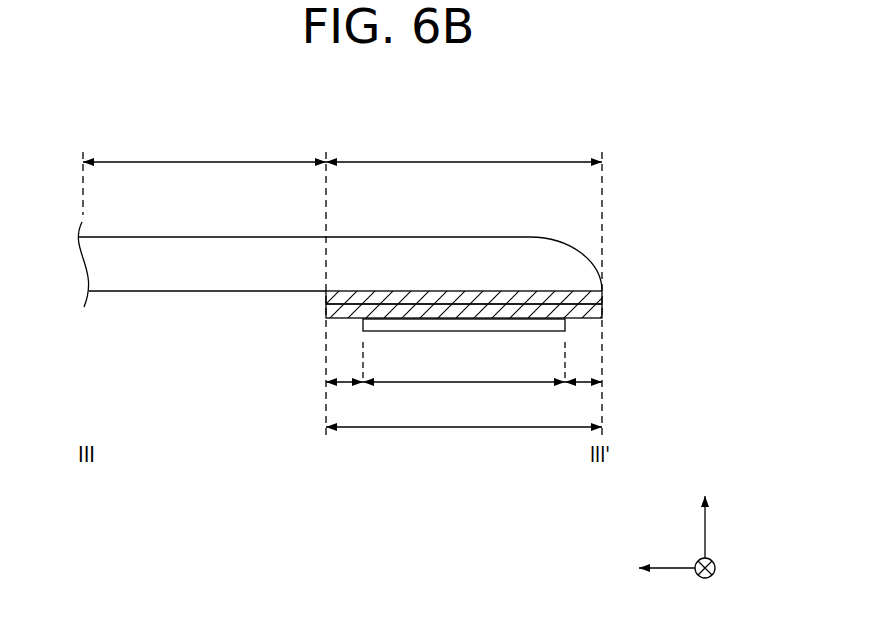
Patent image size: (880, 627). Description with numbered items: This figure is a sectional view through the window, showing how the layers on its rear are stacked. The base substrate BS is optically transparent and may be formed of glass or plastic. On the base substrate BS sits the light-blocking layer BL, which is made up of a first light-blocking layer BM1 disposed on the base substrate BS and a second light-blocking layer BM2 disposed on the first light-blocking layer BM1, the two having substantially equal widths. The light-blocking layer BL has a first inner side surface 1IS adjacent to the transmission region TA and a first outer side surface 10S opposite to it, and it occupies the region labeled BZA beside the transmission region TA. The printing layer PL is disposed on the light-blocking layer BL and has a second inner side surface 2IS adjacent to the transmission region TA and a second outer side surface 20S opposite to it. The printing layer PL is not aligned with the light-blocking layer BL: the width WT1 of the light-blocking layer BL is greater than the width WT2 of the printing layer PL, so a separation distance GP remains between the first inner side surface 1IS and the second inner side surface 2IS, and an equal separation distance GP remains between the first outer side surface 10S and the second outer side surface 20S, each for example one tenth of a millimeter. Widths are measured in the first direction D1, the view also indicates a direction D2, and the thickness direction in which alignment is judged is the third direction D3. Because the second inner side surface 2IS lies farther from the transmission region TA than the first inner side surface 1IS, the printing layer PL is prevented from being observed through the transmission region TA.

The base substrate BS is at (577, 270).
The first outer side surface 10S is at (605, 291).
The light-blocking layer BL is at (528, 313).
The first light-blocking layer BM1 is at (589, 298).
The second light-blocking layer BM2 is at (589, 311).
The printing layer PL is at (589, 322).
The second outer side surface 20S is at (569, 328).
The first inner side surface 1IS is at (324, 297).
The second inner side surface 2IS is at (361, 325).
The transmission region TA is at (204, 146).
The bezel area BZA is at (464, 146).
The separation distance GP is at (464, 398).
The width of the light-blocking layer WT1 is at (464, 443).
The width of the printing layer WT2 is at (464, 398).
The first direction D1 is at (705, 583).
The second direction D2 is at (651, 569).
The third direction D3 is at (705, 513).